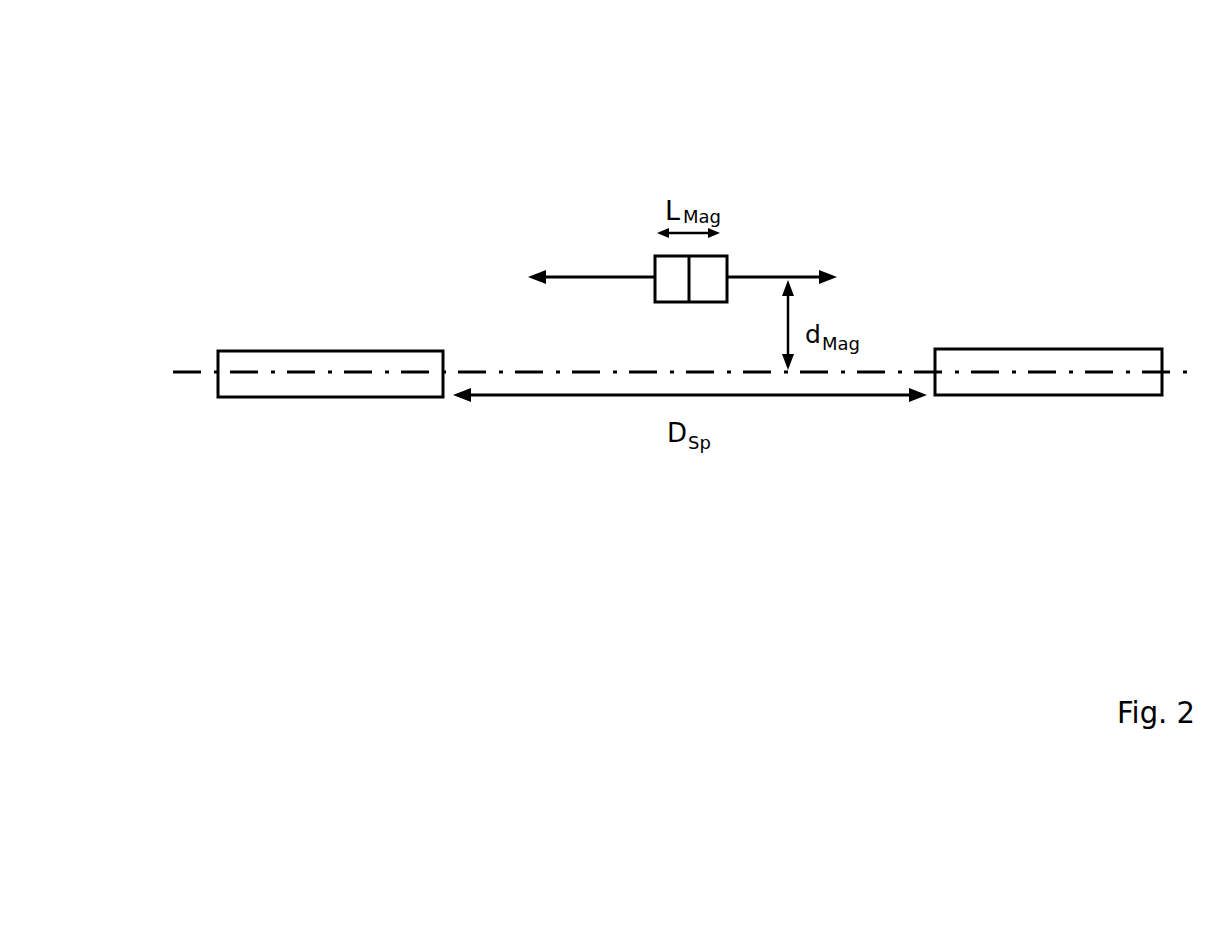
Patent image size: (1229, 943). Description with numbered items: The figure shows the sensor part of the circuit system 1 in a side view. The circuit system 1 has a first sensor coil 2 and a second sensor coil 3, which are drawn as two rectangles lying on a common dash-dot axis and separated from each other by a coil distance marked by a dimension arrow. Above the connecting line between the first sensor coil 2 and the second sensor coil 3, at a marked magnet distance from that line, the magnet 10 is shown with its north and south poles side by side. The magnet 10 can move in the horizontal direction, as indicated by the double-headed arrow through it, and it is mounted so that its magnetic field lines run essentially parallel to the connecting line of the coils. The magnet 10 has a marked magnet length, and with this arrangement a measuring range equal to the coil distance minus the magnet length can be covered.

The circuit system 1 is at (900, 114).
The first sensor coil 2 is at (307, 333).
The second sensor coil 3 is at (1033, 332).
The magnet 10 is at (644, 256).